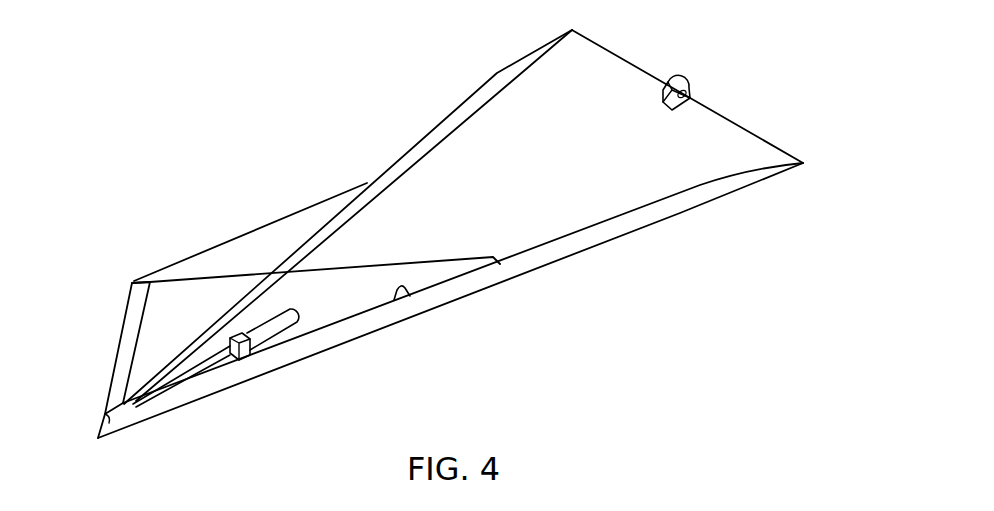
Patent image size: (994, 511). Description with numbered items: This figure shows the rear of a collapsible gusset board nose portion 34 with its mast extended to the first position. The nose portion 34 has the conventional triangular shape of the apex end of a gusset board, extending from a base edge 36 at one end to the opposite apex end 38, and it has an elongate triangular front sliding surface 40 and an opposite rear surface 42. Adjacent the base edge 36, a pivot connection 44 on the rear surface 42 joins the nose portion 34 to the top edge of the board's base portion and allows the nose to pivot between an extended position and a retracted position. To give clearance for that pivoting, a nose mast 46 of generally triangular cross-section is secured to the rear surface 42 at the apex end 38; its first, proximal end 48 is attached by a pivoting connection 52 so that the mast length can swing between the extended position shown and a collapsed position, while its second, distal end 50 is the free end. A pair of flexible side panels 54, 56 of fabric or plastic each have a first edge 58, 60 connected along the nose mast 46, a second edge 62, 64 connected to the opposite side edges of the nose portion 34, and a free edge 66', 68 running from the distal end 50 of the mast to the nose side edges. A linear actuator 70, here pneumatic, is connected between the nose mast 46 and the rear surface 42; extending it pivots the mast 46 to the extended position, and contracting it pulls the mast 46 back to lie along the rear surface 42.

The collapsible gusset board nose portion 34 is at (495, 288).
The base edge 36 is at (729, 118).
The apex end 38 is at (97, 438).
The front sliding surface 40 is at (592, 247).
The rear surface 42 is at (528, 98).
The pivot connection 44 is at (674, 78).
The nose mast 46 is at (126, 319).
The first proximal end of the mast 48 is at (104, 420).
The second distal end of the mast 50 is at (140, 280).
The pivoting connection 52 is at (124, 410).
The flexible side panel 54 is at (340, 308).
The flexible side panel 56 is at (250, 248).
The first edge of side panel 58 is at (112, 379).
The first edge of side panel 60 is at (118, 348).
The second edge of side panel 62 is at (409, 291).
The second edge of side panel 64 is at (322, 222).
The free edge of side panel 66' is at (325, 248).
The free edge of side panel 68 is at (343, 190).
The linear actuator 70 is at (271, 333).